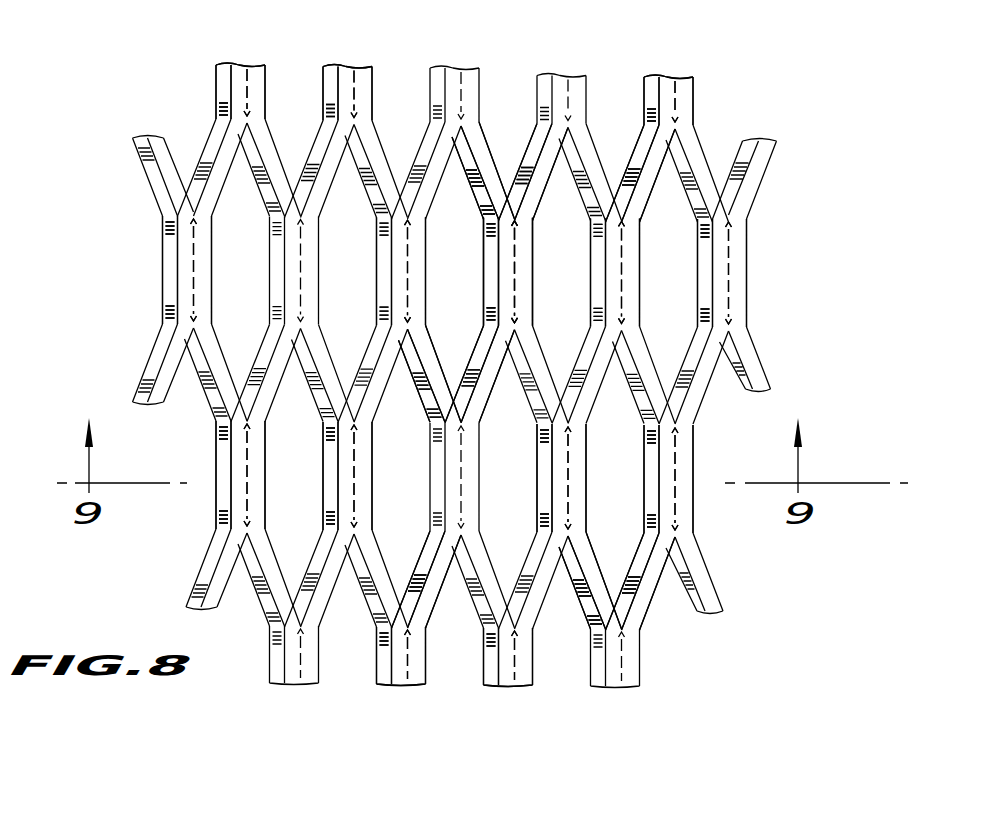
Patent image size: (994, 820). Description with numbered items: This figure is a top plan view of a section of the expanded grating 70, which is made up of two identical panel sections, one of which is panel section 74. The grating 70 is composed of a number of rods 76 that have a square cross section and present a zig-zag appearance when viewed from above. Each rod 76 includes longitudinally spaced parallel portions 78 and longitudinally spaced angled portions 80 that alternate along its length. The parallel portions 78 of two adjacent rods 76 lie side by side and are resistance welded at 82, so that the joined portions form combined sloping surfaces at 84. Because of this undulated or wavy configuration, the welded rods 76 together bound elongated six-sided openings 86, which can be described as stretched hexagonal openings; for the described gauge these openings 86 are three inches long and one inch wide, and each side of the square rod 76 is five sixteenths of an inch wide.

The expanded grating 70 is at (786, 169).
The panel section 74 is at (708, 79).
The rod 76 is at (330, 56).
The parallel portion 78 is at (317, 237).
The angled portion 80 is at (586, 206).
The resistance weld 82 is at (734, 289).
The combined sloping surface 84 is at (494, 283).
The six-sided opening 86 is at (670, 180).